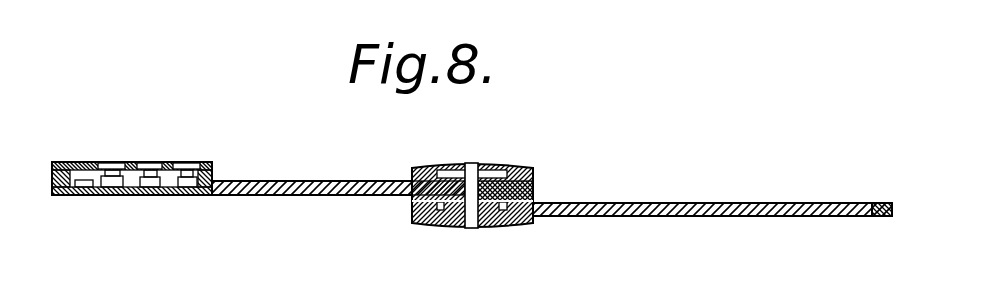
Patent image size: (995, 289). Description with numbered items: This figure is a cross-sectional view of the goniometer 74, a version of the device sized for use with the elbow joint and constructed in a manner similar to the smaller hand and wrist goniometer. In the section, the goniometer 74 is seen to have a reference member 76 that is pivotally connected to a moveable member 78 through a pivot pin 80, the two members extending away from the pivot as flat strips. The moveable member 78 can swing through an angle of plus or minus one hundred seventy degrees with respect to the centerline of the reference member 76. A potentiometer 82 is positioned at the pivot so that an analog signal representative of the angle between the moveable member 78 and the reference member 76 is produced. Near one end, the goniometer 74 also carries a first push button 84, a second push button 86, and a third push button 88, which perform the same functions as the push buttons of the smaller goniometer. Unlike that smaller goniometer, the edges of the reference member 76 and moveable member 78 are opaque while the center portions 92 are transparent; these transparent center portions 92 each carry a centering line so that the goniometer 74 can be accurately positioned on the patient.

The goniometer 74 is at (560, 134).
The reference member 76 is at (357, 168).
The moveable member 78 is at (878, 203).
The pivot pin 80 is at (483, 226).
The potentiometer 82 is at (453, 227).
The first push button 84 is at (150, 162).
The second push button 86 is at (182, 162).
The third push button 88 is at (110, 162).
The center portions 92 is at (293, 196).